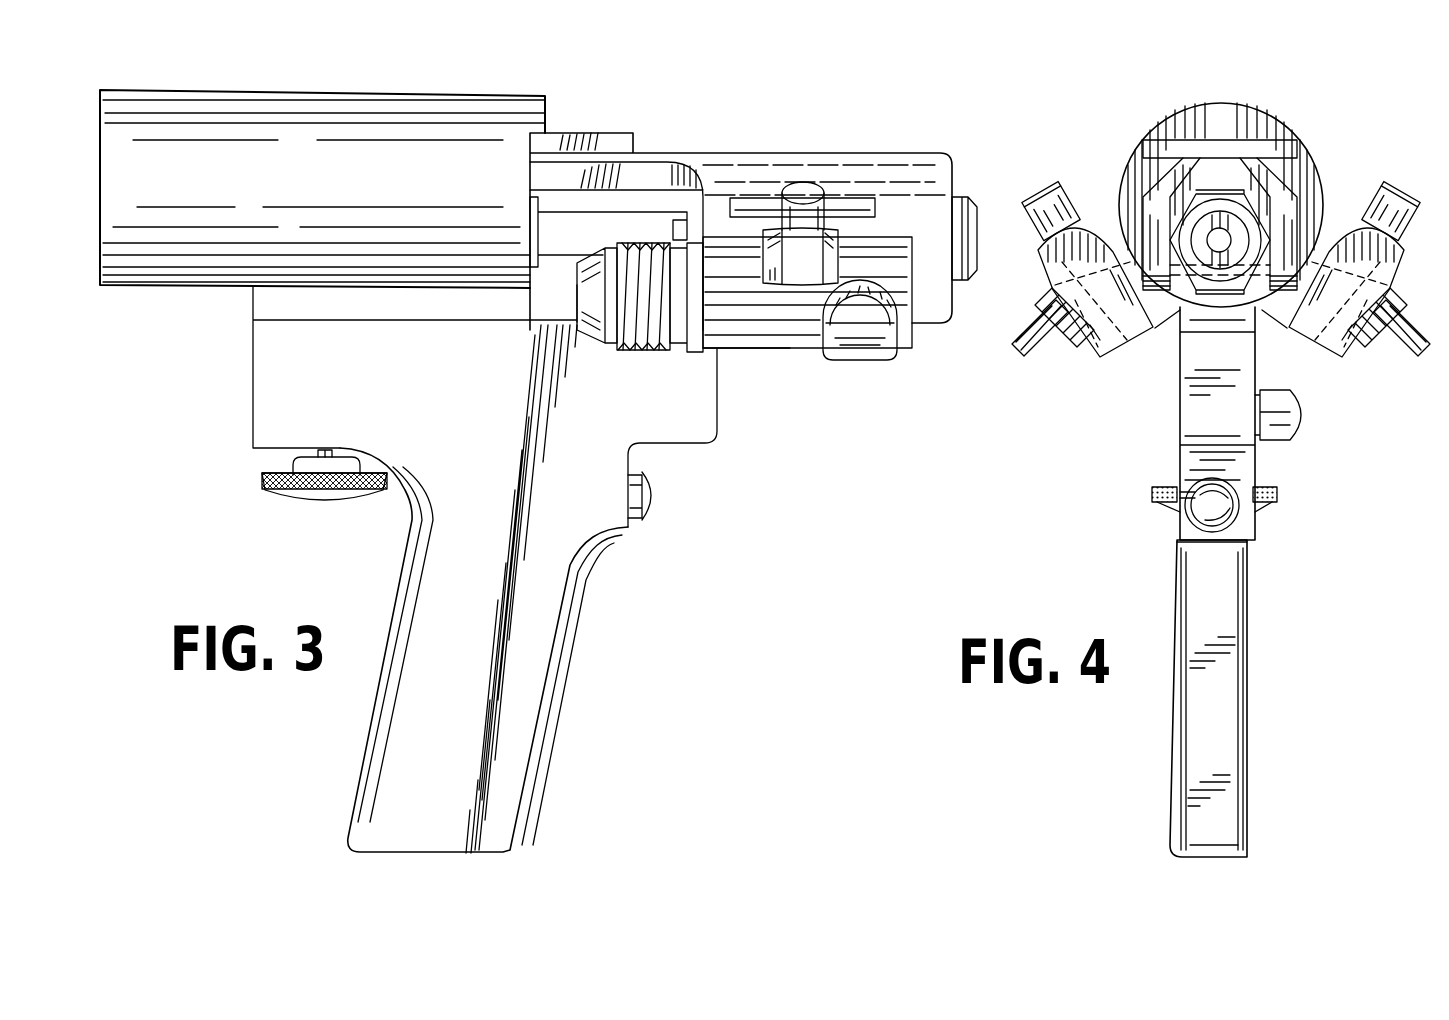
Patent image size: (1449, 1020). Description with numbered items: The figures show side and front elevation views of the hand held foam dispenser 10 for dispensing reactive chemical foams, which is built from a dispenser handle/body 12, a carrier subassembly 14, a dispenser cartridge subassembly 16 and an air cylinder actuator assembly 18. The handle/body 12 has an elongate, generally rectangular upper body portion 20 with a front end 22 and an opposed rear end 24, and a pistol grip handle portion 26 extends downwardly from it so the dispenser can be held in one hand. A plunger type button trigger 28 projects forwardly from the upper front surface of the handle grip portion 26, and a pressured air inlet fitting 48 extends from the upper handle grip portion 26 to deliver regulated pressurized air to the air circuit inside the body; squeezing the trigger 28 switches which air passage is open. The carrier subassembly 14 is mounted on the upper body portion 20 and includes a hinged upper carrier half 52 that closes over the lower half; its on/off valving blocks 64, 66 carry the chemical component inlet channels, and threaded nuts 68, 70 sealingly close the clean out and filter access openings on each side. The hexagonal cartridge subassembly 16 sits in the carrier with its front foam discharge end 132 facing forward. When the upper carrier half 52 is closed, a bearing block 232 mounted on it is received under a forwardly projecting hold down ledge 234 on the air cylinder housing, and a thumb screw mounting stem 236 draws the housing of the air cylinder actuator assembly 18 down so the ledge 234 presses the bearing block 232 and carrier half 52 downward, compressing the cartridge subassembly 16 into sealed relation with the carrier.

In FIG. 3, the foam dispenser 10 is at (613, 583).
In FIG. 3, the dispenser handle/body 12 is at (660, 413).
In FIG. 3, the carrier subassembly 14 is at (920, 155).
In FIG. 3, the dispenser cartridge subassembly 16 is at (975, 212).
In FIG. 3, the air cylinder actuator assembly 18 is at (388, 92).
In FIG. 4, the air cylinder actuator assembly 18 is at (1320, 163).
In FIG. 3, the upper body portion 20 is at (307, 369).
In FIG. 3, the front end 22 is at (687, 378).
In FIG. 3, the rear end 24 is at (265, 328).
In FIG. 3, the pistol grip handle portion 26 is at (467, 747).
In FIG. 4, the pistol grip handle portion 26 is at (1212, 698).
In FIG. 3, the button trigger 28 is at (657, 493).
In FIG. 4, the button trigger 28 is at (1217, 507).
In FIG. 4, the pressured air inlet fitting 48 is at (1297, 427).
In FIG. 4, the upper carrier half 52 is at (1203, 180).
In FIG. 4, the on/off valving block 64 is at (1057, 207).
In FIG. 4, the on/off valving block 66 is at (1395, 207).
In FIG. 4, the threaded nut 68 is at (1072, 362).
In FIG. 4, the threaded nut 70 is at (1383, 296).
In FIG. 4, the front foam discharge end 132 is at (1207, 277).
In FIG. 4, the bearing block 232 is at (1240, 147).
In FIG. 4, the hold down ledge 234 is at (1277, 147).
In FIG. 4, the thumb screw mounting stem 236 is at (1153, 497).